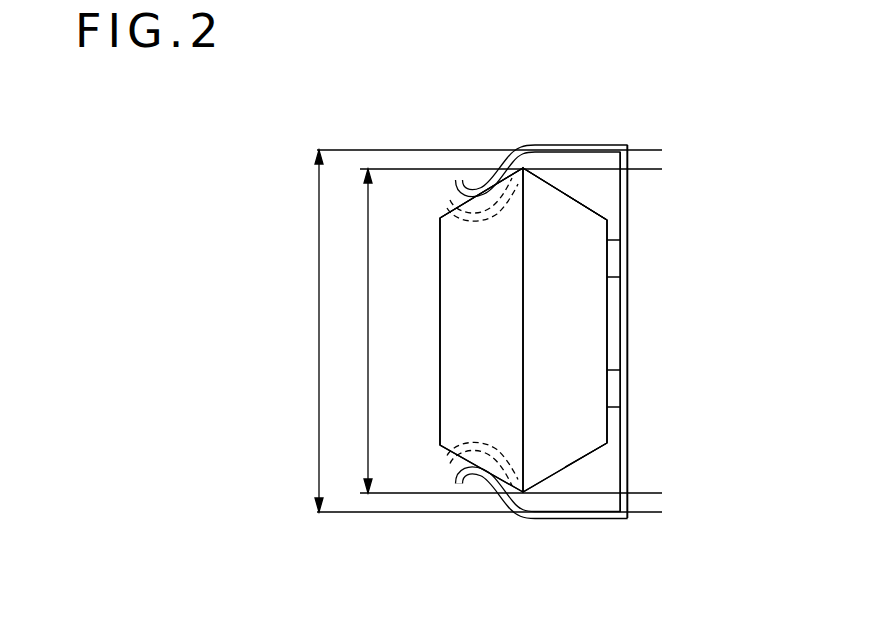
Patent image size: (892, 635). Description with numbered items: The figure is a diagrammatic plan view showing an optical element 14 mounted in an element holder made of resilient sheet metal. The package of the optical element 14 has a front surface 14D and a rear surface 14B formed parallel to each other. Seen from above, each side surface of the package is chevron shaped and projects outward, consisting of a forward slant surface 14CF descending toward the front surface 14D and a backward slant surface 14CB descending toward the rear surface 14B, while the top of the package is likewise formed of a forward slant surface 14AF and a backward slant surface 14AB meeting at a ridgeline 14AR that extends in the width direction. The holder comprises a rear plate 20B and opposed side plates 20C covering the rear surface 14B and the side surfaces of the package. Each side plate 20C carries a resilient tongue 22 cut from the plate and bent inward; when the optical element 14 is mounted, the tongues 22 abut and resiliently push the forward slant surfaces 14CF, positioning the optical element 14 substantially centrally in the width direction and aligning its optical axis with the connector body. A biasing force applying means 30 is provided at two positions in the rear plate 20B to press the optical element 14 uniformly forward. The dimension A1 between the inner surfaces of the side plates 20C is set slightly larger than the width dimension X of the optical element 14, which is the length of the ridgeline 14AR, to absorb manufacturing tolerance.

The optical element 14 is at (502, 324).
The forward slant surface 14AF is at (460, 321).
The backward slant surface 14AB is at (586, 293).
The ridgeline 14AR is at (526, 232).
The rear surface 14B is at (612, 353).
The front surface 14D is at (440, 373).
The forward slant surface 14CF is at (442, 212).
The backward slant surface 14CB is at (580, 205).
The rear plate 20B is at (627, 429).
The side plates 20C is at (553, 145).
The resilient tongue 22 is at (480, 166).
The biasing force applying means 30 is at (613, 258).
The dimension between inner surfaces of side plates A1 is at (319, 257).
The width dimension of optical element X is at (368, 413).